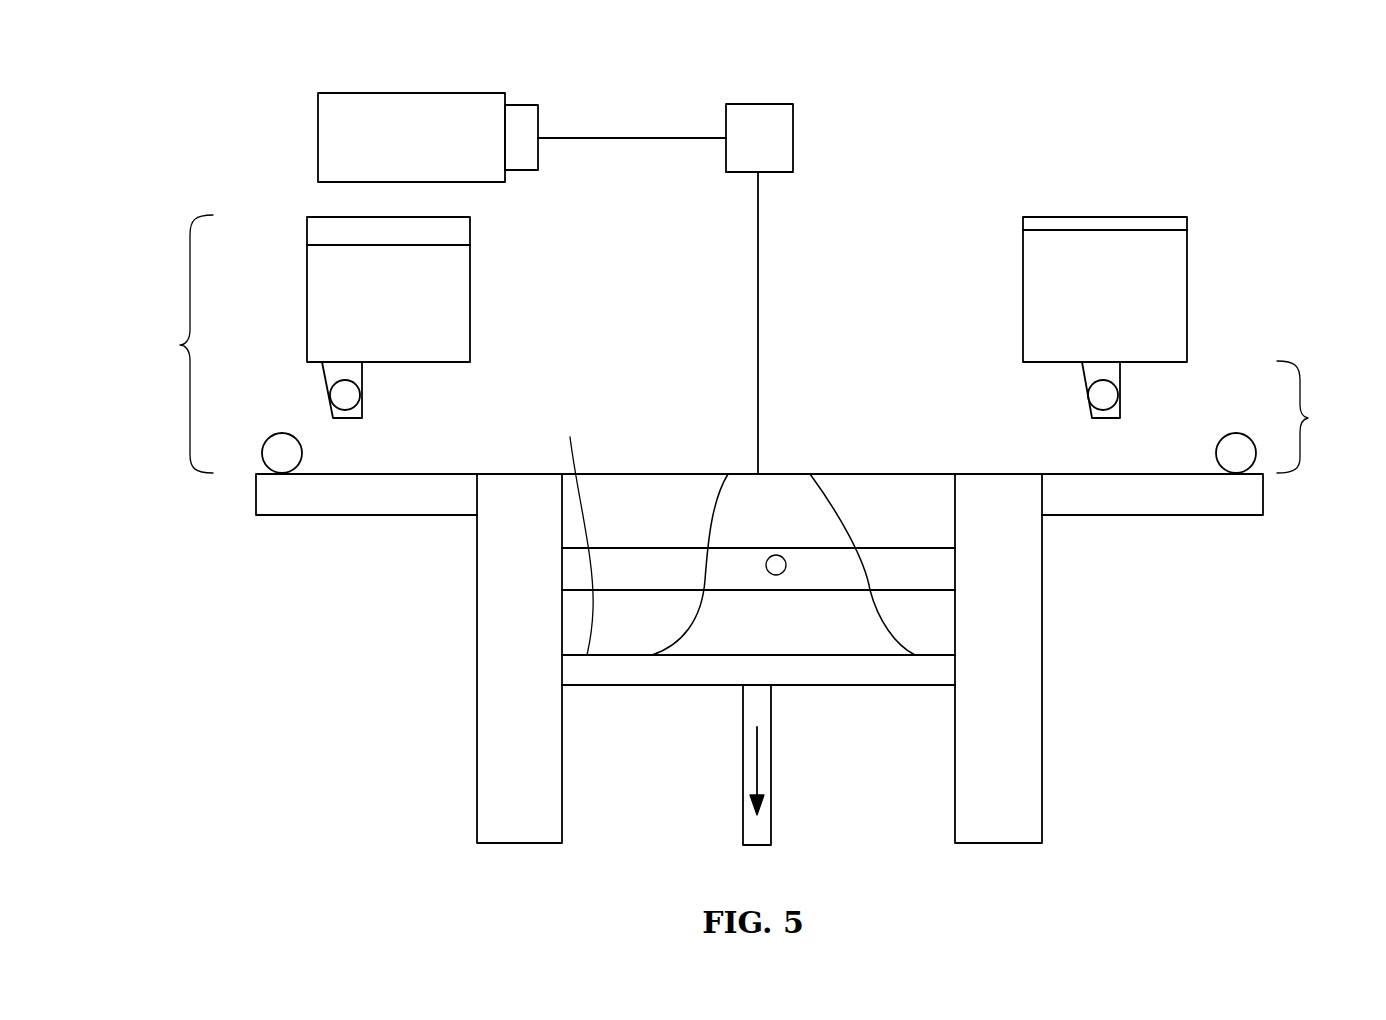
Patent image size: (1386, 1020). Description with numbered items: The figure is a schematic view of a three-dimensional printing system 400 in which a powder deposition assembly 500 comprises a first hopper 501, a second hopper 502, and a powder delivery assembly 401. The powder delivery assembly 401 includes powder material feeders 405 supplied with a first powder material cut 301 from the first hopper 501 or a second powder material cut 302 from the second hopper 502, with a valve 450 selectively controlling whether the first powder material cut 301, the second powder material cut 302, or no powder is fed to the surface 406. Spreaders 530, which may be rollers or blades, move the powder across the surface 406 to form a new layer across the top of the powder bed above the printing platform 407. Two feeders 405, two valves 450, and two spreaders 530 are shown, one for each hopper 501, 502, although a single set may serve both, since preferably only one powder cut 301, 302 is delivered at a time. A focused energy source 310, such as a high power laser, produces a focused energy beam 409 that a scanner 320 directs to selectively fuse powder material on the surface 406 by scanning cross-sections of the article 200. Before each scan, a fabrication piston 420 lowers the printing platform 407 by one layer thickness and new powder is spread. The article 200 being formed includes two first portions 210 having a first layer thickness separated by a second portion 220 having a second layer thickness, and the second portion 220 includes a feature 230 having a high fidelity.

The article 200 is at (830, 498).
The first portion 210 is at (745, 532).
The second portion 220 is at (800, 583).
The feature 230 is at (767, 572).
The first powder material cut 301 is at (365, 310).
The second powder material cut 302 is at (1082, 310).
The focused energy source 310 is at (385, 155).
The scanner 320 is at (736, 155).
The 3D printing system 400 is at (1120, 130).
The powder delivery assembly 401 is at (1310, 418).
The powder material feeder 405 is at (362, 375).
The surface 406 is at (447, 474).
The printing platform 407 is at (570, 532).
The focused energy beam 409 is at (630, 137).
The fabrication piston 420 is at (771, 762).
The valve 450 is at (348, 396).
The powder deposition assembly 500 is at (178, 345).
The first hopper 501 is at (470, 270).
The second hopper 502 is at (1187, 278).
The spreader 530 is at (268, 438).